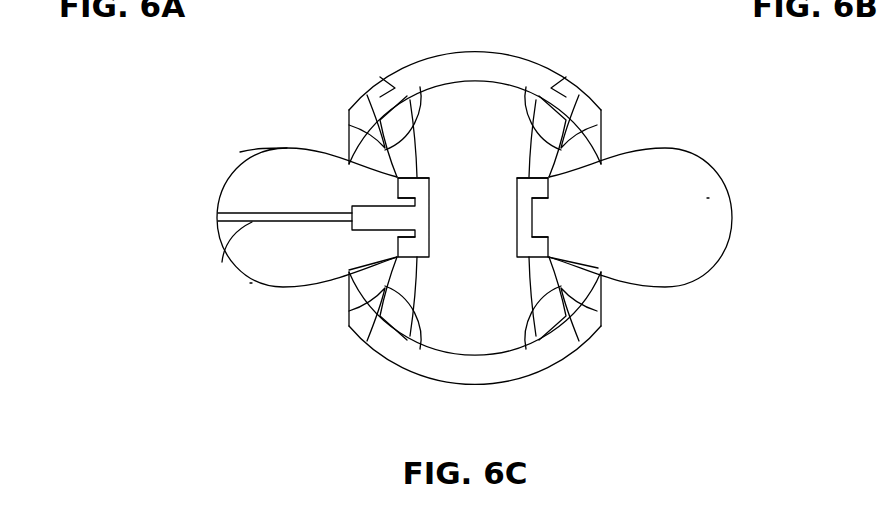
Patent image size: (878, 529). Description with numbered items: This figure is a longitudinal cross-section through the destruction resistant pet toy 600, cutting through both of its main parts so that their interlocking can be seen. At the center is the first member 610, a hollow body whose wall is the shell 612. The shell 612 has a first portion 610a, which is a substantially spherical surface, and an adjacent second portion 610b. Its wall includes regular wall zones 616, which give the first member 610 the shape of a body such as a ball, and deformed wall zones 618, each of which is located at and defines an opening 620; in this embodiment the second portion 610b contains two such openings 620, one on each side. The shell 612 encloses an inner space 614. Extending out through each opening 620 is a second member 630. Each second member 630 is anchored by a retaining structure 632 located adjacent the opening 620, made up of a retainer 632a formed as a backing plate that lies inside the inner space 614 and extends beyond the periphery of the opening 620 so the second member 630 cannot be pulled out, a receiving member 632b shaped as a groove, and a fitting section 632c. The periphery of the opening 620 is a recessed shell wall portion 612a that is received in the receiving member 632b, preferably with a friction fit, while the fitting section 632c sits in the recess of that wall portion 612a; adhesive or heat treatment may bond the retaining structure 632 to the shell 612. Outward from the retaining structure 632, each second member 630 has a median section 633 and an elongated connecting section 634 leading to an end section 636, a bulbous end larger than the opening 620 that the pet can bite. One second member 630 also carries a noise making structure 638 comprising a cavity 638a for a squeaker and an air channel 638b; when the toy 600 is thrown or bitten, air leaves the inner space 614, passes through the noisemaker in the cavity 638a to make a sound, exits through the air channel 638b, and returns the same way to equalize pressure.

The destruction resistant pet toy 600 is at (766, 169).
The first member 610 is at (477, 66).
The first portion 610a is at (566, 77).
The second portion 610b is at (388, 90).
The shell 612 is at (387, 82).
The recessed shell wall portion 612a is at (396, 312).
The inner space 614 is at (510, 131).
The regular wall zone 616 is at (431, 68).
The deformed wall zone 618 is at (350, 110).
The opening 620 is at (603, 166).
The second member 630 is at (250, 283).
The retaining structure 632 is at (611, 138).
The retainer 632a is at (408, 258).
The receiving member 632b is at (386, 257).
The fitting section 632c is at (378, 268).
The median section 633 is at (413, 216).
The connecting section 634 is at (260, 150).
The end section 636 is at (217, 201).
The noise making structure 638 is at (208, 171).
The cavity 638a is at (362, 152).
The air channel 638b is at (222, 262).